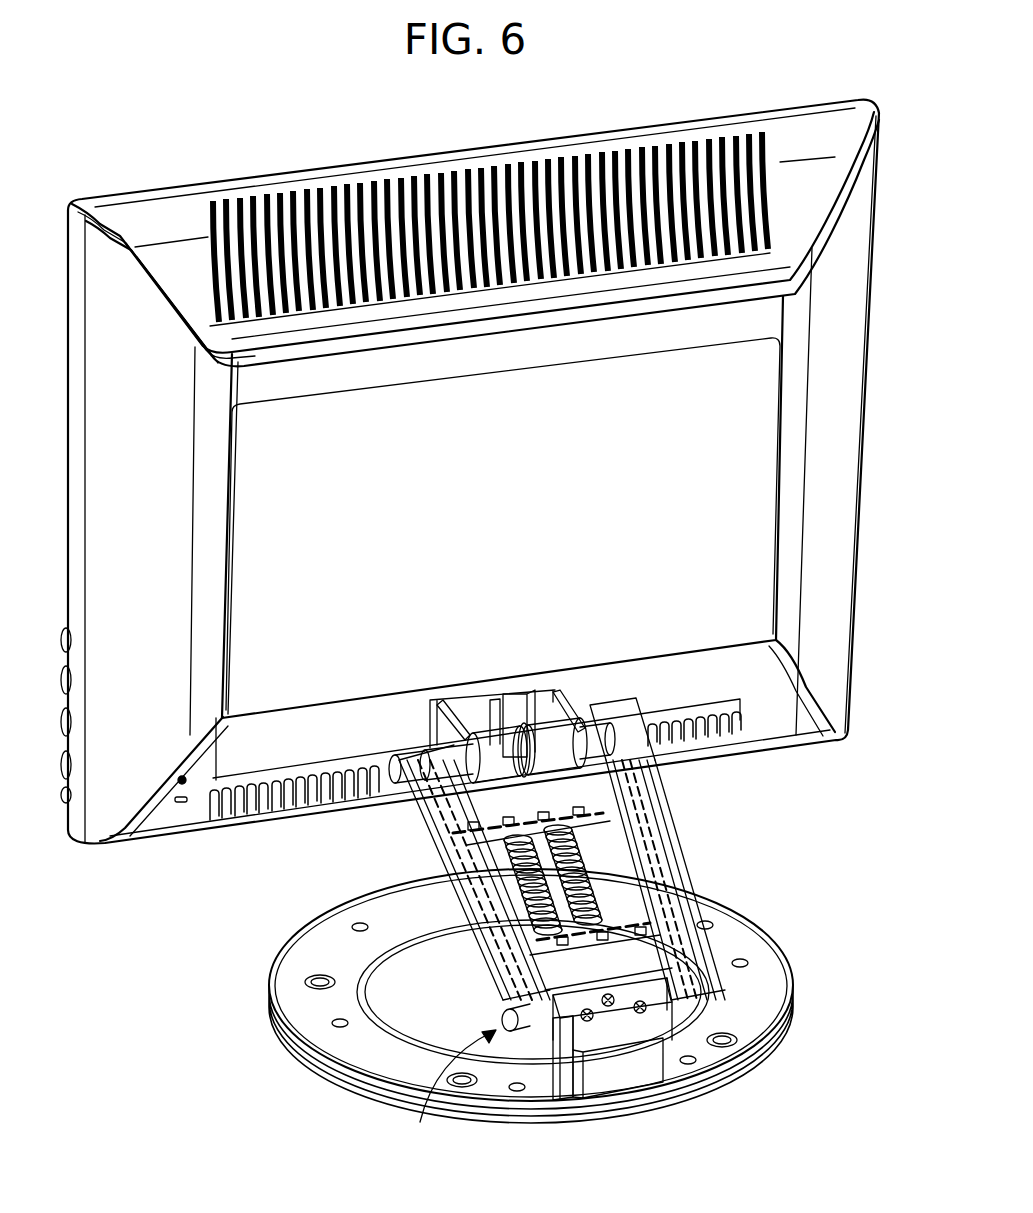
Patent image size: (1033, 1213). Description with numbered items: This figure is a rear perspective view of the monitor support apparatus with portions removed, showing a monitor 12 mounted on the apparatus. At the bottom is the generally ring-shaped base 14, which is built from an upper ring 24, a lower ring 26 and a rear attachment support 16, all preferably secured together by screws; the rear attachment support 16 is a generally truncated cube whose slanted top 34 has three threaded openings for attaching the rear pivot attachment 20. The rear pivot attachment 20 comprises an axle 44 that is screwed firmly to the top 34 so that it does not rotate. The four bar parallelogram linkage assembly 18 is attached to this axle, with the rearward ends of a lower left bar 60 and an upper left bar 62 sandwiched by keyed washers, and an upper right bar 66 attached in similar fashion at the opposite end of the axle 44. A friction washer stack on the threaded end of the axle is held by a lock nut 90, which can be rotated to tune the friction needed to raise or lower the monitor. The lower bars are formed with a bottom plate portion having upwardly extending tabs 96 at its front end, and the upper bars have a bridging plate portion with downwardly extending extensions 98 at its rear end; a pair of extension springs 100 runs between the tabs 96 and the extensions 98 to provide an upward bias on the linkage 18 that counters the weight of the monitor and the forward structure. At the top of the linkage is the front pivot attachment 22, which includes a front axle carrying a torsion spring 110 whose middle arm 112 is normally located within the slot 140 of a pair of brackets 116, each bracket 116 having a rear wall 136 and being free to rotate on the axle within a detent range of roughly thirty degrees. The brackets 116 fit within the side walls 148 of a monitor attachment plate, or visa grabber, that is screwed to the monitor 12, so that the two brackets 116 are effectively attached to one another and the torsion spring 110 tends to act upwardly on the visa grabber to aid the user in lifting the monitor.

The monitor 12 is at (826, 522).
The base 14 is at (562, 1010).
The rear attachment support 16 is at (602, 1071).
The four bar parallelogram linkage assembly 18 is at (549, 818).
The rear pivot attachment 20 is at (448, 1090).
The front pivot attachment 22 is at (363, 790).
The upper ring 24 is at (760, 990).
The lower ring 26 is at (782, 1043).
The slanted top 34 is at (624, 1050).
The axle 44 is at (556, 1048).
The lower left bar 60 is at (495, 968).
The upper left bar 62 is at (468, 858).
The upper right bar 66 is at (668, 822).
The lock nut 90 is at (508, 1020).
The tabs 96 is at (560, 812).
The extensions 98 is at (690, 935).
The extension springs 100 is at (386, 890).
The torsion spring 110 is at (563, 712).
The middle arm 112 is at (526, 692).
The brackets 116 is at (432, 700).
The rear wall 136 is at (461, 692).
The slot 140 is at (483, 698).
The side walls 148 is at (420, 729).